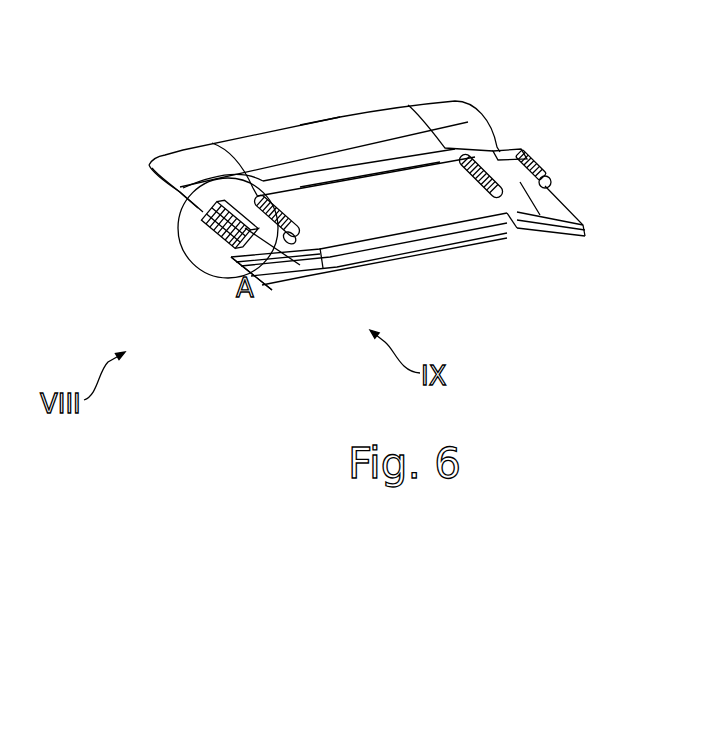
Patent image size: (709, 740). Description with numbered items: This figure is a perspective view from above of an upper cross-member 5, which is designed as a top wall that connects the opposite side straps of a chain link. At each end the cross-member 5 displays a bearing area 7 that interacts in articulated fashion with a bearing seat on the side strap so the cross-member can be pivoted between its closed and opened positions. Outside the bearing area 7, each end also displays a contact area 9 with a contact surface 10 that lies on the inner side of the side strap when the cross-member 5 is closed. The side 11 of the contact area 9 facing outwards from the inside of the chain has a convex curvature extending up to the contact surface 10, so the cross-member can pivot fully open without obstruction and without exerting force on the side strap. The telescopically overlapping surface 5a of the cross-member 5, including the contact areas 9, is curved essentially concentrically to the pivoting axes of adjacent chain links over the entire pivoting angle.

The upper cross-member 5 is at (427, 258).
The telescopically overlapping surface 5a is at (285, 143).
The bearing area 7 is at (548, 160).
The contact area 9 is at (183, 163).
The contact surface 10 is at (198, 208).
The side of contact area 11 is at (353, 193).